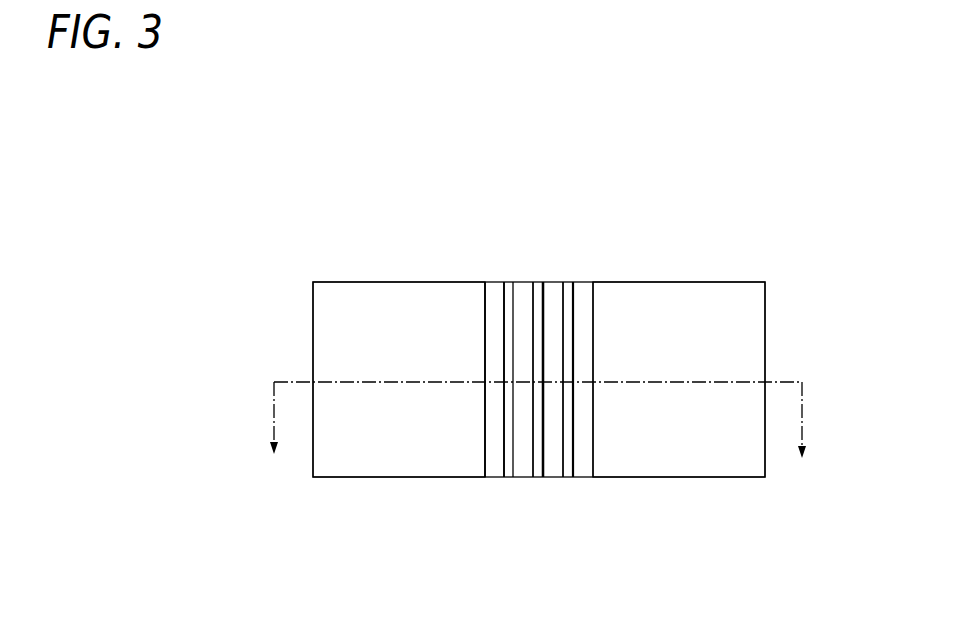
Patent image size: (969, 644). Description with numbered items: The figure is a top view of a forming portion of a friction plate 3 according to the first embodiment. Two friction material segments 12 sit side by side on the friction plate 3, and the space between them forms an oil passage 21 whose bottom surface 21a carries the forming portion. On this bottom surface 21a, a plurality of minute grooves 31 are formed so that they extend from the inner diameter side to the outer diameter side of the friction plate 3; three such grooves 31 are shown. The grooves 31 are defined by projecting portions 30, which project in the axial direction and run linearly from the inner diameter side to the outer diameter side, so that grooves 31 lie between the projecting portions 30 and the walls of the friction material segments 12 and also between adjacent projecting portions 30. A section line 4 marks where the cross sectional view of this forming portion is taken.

The friction plate 3 is at (600, 217).
The line 4- 4 is at (537, 434).
The friction material segments 12 is at (363, 310).
The oil passage 21 is at (523, 282).
The bottom surface 21a is at (495, 298).
The projecting portions 30 is at (537, 468).
The grooves 31 is at (495, 468).